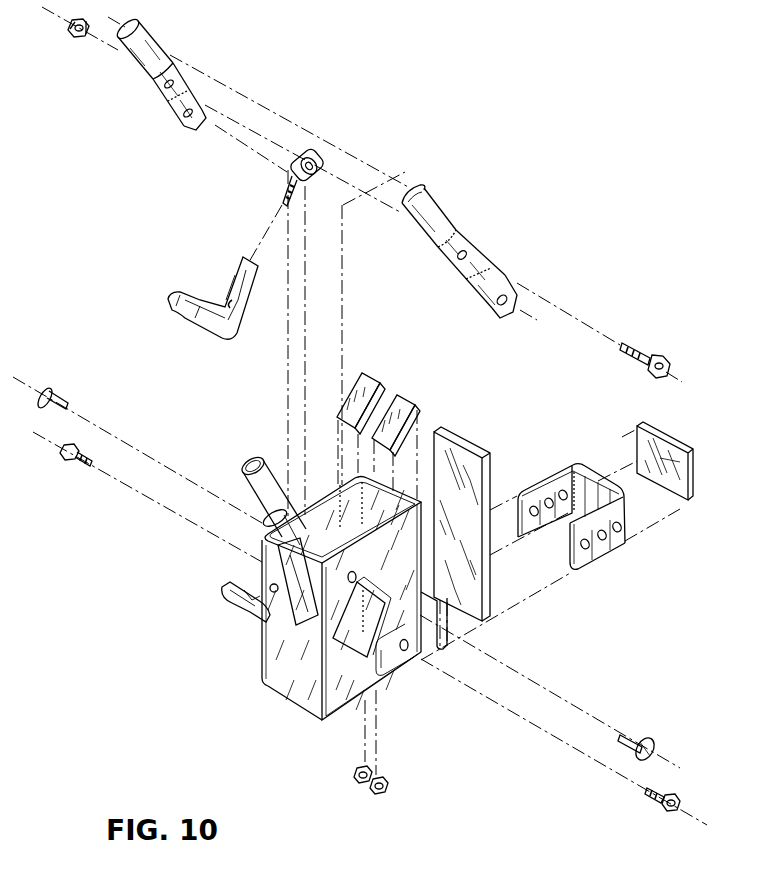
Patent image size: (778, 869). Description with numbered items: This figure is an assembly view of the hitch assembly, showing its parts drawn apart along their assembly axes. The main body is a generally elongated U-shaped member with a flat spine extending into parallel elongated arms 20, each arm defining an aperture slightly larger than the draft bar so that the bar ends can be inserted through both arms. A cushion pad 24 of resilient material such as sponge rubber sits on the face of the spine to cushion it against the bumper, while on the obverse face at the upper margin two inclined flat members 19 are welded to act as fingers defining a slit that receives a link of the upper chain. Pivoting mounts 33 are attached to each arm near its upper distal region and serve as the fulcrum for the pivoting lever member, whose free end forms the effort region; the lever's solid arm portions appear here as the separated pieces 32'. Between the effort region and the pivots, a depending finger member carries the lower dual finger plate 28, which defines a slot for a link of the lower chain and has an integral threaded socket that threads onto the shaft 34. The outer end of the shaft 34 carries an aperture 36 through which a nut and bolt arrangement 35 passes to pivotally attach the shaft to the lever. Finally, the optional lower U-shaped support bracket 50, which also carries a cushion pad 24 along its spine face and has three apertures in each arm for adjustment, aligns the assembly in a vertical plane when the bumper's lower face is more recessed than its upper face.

The inclined flat members 19 is at (378, 377).
The arms 20 is at (400, 697).
The cushion pad 24 is at (470, 436).
The dual finger plate 28 is at (219, 291).
The tubular support arm 32' is at (315, 167).
The pivoting mounts 33 is at (69, 396).
The shaft 34 is at (316, 152).
The nut and bolt arrangement 35 is at (72, 40).
The aperture 36 is at (650, 351).
The lower U shaped support bracket 50 is at (617, 562).